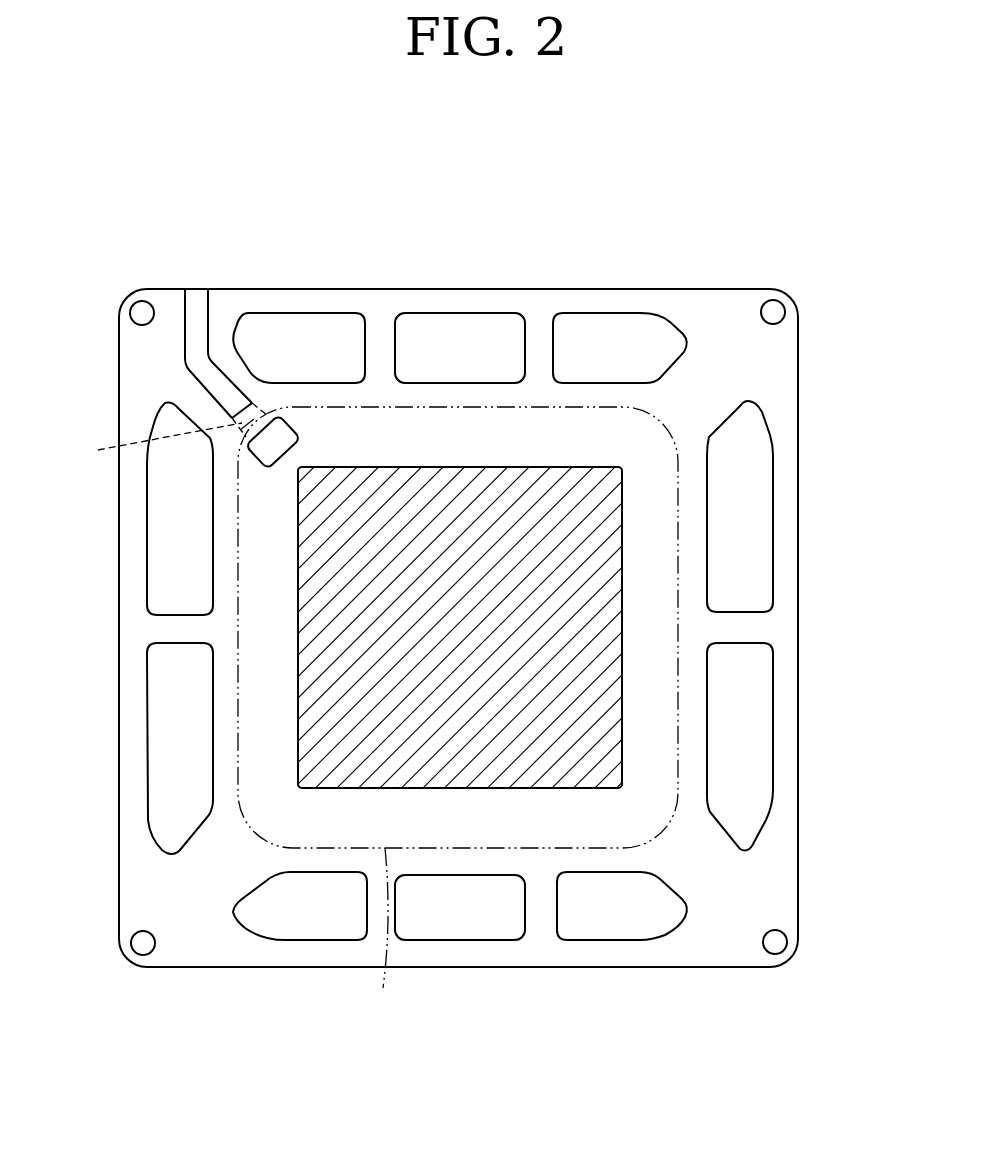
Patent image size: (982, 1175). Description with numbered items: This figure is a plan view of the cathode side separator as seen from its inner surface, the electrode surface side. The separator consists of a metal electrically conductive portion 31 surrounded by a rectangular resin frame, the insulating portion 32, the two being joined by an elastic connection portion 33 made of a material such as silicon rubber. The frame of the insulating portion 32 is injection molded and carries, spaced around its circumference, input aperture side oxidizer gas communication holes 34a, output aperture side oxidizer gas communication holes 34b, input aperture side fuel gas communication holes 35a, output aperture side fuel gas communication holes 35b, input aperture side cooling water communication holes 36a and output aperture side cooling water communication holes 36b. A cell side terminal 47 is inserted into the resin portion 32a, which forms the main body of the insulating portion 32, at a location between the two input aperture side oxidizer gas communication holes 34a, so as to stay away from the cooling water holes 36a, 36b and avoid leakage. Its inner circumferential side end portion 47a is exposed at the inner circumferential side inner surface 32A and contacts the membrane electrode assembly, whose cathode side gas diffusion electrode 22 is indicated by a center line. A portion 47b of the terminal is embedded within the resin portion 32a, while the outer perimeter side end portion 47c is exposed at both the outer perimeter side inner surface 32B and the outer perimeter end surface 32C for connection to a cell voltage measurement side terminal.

The insulating portion 32 is at (457, 560).
The resin portion 32a is at (708, 380).
The inner circumferential side inner surface 32A is at (297, 425).
The outer perimeter side inner surface 32B is at (172, 335).
The outer perimeter end surface 32C is at (222, 289).
The electrically conductive portion 31 is at (460, 649).
The connection portion 33 is at (470, 773).
The input aperture side oxidizer gas communication hole 34a is at (293, 333).
The output aperture side oxidizer gas communication hole 34b is at (757, 805).
The input aperture side fuel gas communication hole 35a is at (282, 923).
The output aperture side fuel gas communication hole 35b is at (620, 335).
The input aperture side cooling water communication hole 36a is at (463, 335).
The output aperture side cooling water communication hole 36b is at (458, 920).
The cell side terminal 47 is at (174, 368).
The inner circumferential side end portion 47a is at (285, 445).
The embedded portion 47b is at (144, 445).
The outer perimeter side end portion 47c is at (178, 300).
The cathode side gas diffusion electrode 22 is at (386, 935).